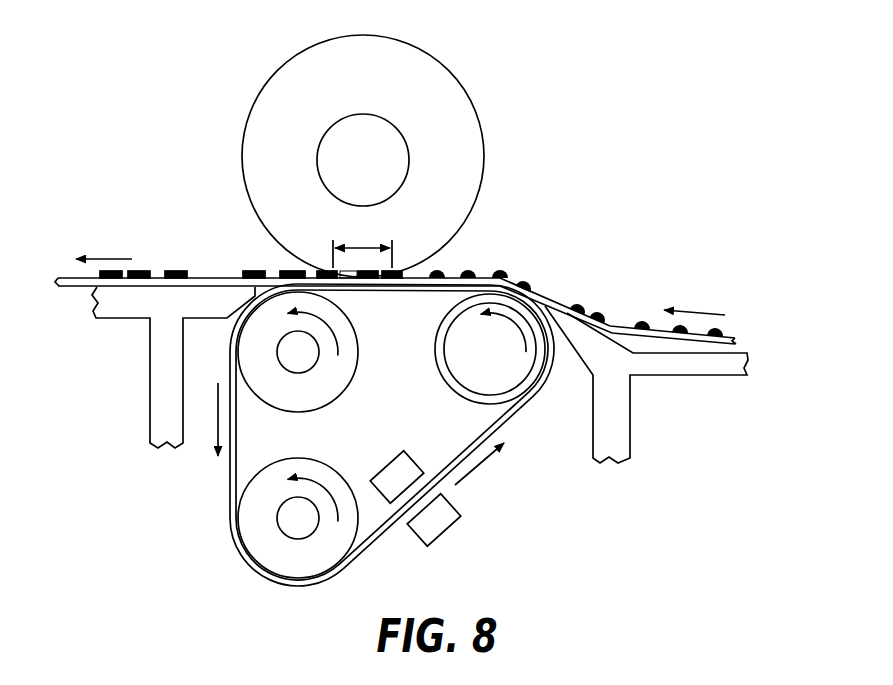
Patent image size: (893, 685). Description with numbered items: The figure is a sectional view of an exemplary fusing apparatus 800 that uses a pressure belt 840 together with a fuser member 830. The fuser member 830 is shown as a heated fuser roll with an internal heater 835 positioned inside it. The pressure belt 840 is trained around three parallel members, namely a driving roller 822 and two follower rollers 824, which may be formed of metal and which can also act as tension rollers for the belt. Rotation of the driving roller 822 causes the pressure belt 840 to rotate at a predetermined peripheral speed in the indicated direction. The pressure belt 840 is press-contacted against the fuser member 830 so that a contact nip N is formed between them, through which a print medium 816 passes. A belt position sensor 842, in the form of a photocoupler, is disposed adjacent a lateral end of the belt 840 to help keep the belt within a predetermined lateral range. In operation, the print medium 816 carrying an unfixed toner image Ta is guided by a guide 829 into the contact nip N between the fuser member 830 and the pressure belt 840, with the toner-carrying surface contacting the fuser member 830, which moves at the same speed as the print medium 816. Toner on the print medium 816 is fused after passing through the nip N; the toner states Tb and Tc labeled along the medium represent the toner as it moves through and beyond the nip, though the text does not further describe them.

The fusing apparatus 800 is at (163, 76).
The print medium 816 is at (70, 277).
The driving roller 822 is at (520, 373).
The follower rollers 824 is at (327, 404).
The guide 829 is at (673, 378).
The fuser member 830 is at (472, 108).
The internal heater 835 is at (349, 171).
The pressure belt 840 is at (512, 421).
The belt position sensor 842 is at (387, 468).
The contact nip N is at (368, 242).
The unfixed toner image Ta is at (642, 319).
The toner (state b) Tb is at (320, 268).
The toner (state c) Tc is at (175, 270).